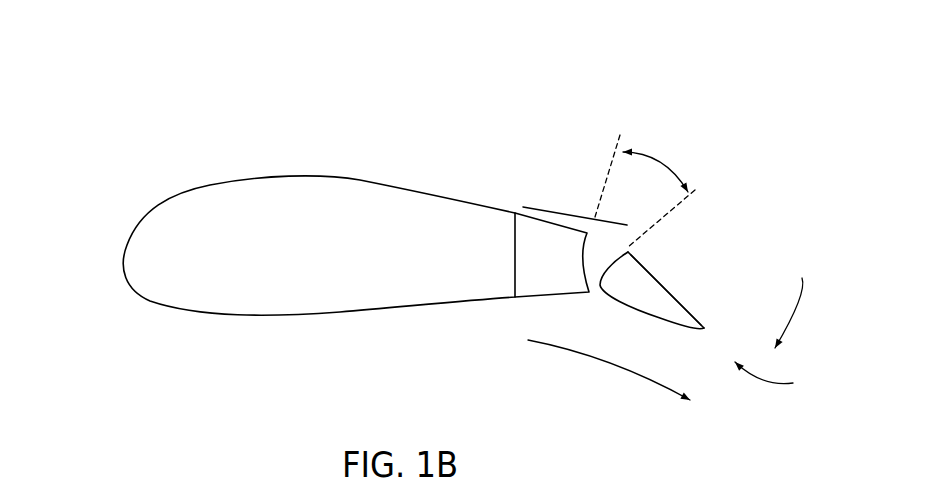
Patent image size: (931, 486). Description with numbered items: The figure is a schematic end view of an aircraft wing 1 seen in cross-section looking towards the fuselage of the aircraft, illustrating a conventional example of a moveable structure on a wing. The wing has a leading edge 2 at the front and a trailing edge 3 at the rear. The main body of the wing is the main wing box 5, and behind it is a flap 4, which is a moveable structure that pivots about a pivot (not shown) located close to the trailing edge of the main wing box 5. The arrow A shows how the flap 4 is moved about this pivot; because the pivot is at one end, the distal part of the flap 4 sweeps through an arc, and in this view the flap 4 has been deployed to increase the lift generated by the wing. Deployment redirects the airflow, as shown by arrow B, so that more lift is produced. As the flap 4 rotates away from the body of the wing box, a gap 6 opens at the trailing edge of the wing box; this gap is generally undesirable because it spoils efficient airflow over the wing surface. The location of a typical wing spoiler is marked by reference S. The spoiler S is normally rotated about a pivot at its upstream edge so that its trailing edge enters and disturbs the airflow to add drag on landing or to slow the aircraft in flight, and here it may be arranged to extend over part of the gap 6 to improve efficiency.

The aircraft wing 1 is at (408, 142).
The leading edge 2 is at (123, 262).
The trailing edge 3 is at (774, 380).
The flap 4 is at (682, 293).
The main wing box 5 is at (520, 297).
The gap 6 is at (645, 191).
The spoiler S is at (538, 204).
The arrow A is at (793, 300).
The arrow B is at (600, 363).